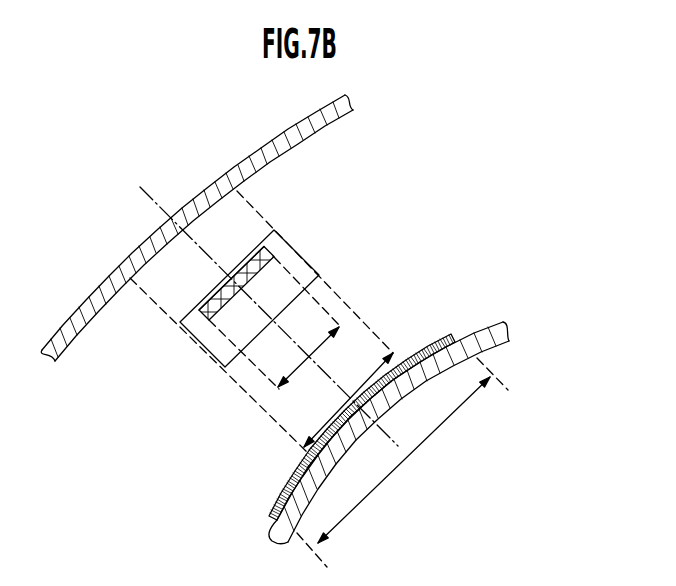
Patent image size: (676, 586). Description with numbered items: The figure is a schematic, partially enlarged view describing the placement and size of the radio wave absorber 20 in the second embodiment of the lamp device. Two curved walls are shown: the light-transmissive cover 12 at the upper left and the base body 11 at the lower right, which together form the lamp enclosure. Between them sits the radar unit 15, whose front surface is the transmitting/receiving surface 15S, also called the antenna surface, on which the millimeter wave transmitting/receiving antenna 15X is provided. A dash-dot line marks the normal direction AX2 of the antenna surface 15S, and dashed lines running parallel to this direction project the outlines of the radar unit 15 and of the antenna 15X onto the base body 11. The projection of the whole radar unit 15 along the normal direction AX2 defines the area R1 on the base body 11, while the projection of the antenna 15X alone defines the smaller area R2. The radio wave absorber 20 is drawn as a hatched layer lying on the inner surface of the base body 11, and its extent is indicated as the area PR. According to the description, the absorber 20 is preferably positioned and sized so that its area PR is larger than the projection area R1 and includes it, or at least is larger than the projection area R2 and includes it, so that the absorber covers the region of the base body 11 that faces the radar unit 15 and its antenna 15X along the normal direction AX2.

The base body 11 is at (507, 340).
The light-transmissive cover 12 is at (245, 160).
The radar unit 15 is at (303, 268).
The millimeter wave transmitting/receiving antenna 15X is at (266, 250).
The transmitting/receiving surface 15S is at (213, 296).
The radio wave absorber 20 is at (433, 343).
The normal direction AX2 is at (248, 303).
The projection area of the radar unit R1 is at (348, 400).
The projection area of the antenna R2 is at (308, 353).
The area of the radio wave absorber PR is at (402, 462).